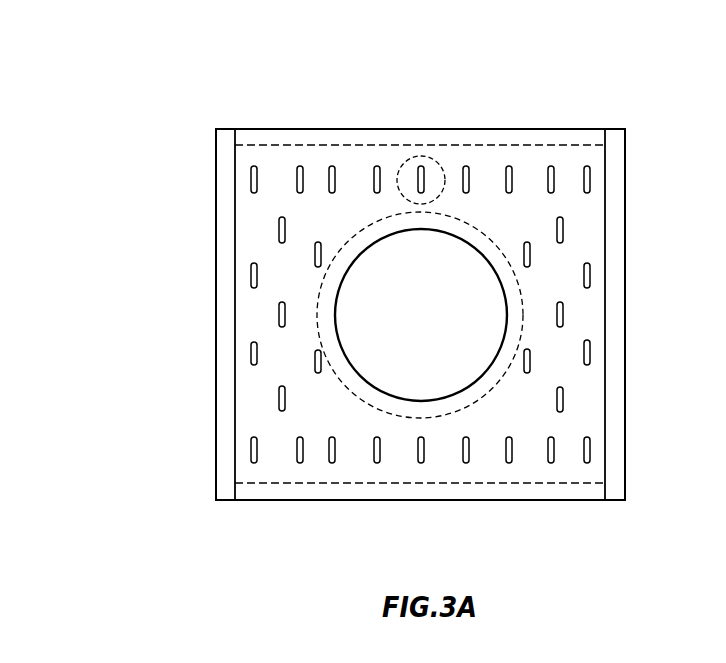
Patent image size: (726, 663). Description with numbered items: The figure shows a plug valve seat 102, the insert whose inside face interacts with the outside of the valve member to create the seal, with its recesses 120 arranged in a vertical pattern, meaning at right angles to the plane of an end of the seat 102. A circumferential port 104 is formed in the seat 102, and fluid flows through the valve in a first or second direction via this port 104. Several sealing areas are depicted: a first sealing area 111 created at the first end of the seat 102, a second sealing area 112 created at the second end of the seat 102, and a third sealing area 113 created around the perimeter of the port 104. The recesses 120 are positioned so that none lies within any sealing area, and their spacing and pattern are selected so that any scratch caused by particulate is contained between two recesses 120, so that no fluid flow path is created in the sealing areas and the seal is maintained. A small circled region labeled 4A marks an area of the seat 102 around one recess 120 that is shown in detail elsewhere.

The seat 102 is at (248, 128).
The first sealing area 111 is at (473, 145).
The second sealing area 112 is at (335, 483).
The third sealing area 113 is at (318, 296).
The port 104 is at (421, 315).
The recess 120 is at (562, 232).
The detail region of FIG. 4A is at (405, 158).